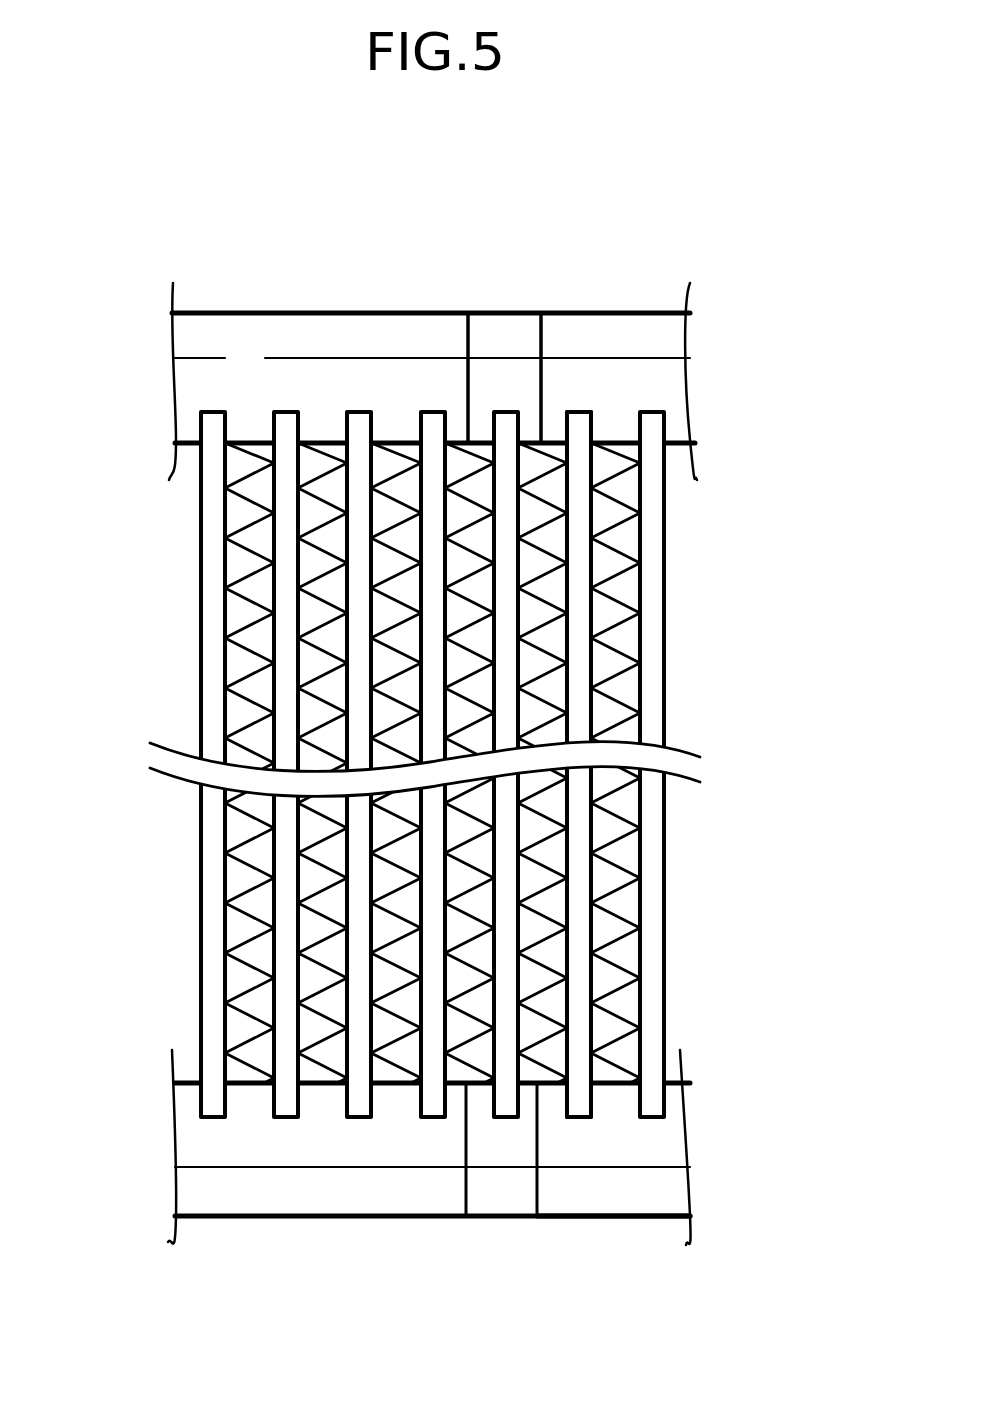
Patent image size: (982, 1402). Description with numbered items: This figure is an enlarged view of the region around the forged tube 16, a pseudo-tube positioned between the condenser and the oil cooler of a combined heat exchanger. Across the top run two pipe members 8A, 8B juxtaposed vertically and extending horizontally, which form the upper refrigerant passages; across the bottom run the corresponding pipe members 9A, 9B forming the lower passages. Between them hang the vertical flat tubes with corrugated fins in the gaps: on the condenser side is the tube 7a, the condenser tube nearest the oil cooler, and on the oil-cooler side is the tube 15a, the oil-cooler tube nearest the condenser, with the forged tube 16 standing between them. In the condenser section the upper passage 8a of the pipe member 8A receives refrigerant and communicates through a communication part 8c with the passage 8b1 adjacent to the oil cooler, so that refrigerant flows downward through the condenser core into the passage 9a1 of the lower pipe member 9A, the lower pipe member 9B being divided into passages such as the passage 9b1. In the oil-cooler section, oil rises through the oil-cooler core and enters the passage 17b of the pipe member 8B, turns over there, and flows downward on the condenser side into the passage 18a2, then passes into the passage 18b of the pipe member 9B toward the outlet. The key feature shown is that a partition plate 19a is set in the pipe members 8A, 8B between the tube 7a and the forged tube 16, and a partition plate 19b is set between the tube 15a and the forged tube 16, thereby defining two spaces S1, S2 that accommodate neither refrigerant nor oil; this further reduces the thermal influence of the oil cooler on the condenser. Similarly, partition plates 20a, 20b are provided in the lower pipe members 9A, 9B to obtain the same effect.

The tube of the condenser 7a is at (425, 400).
The upper passage 8a is at (204, 327).
The communication part 8c is at (243, 360).
The pipe member 8A is at (612, 312).
The pipe member 8B is at (190, 378).
The passage 8b1 is at (190, 405).
The passage 17b is at (662, 383).
The partition plate 19a is at (467, 343).
The partition plate 19b is at (543, 333).
The space S1 is at (503, 320).
The space S2 is at (514, 295).
The tube of the oil cooler 15a is at (593, 562).
The forged tube 16 is at (557, 628).
The passage 9a1 is at (190, 1143).
The pipe member 9A is at (663, 1133).
The passage 9b1 is at (200, 1200).
The pipe member 9B is at (247, 1217).
The partition plate 20a is at (463, 1188).
The partition plate 20b is at (540, 1197).
The passage 18b is at (610, 1218).
The passage 18a2 is at (623, 1147).